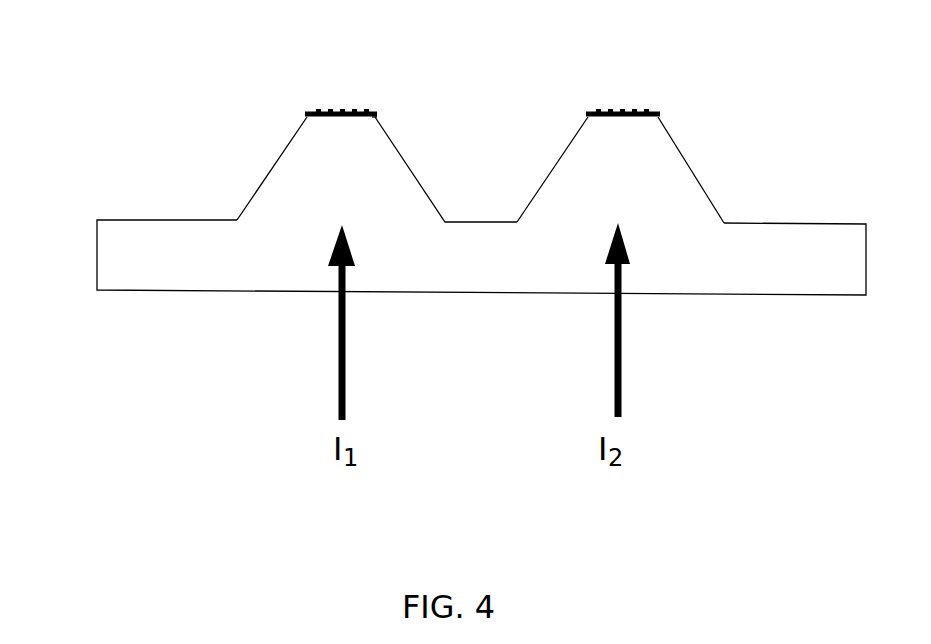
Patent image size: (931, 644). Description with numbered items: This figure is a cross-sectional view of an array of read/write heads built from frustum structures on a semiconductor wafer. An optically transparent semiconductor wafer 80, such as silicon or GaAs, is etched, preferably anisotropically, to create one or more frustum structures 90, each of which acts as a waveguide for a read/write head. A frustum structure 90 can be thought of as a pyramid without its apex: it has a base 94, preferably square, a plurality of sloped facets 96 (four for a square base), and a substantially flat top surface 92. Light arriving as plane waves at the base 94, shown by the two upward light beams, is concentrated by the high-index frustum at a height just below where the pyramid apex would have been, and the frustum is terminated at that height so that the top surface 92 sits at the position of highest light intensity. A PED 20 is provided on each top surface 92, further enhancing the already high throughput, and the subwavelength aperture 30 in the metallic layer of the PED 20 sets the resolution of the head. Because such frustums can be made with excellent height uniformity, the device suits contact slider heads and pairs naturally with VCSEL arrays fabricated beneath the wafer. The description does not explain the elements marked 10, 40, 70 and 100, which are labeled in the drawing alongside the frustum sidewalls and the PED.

The ridge structure 10 is at (390, 162).
The PED 20 is at (306, 112).
The aperture 30 is at (343, 116).
The film edge 40 is at (372, 112).
The second ridge sidewall 70 is at (692, 157).
The semiconductor wafer 80 is at (107, 243).
The frustum structure 90 is at (400, 148).
The top surface 92 is at (660, 117).
The base 94 is at (727, 220).
The facets 96 is at (538, 191).
The first ridge sidewall 100 is at (256, 186).